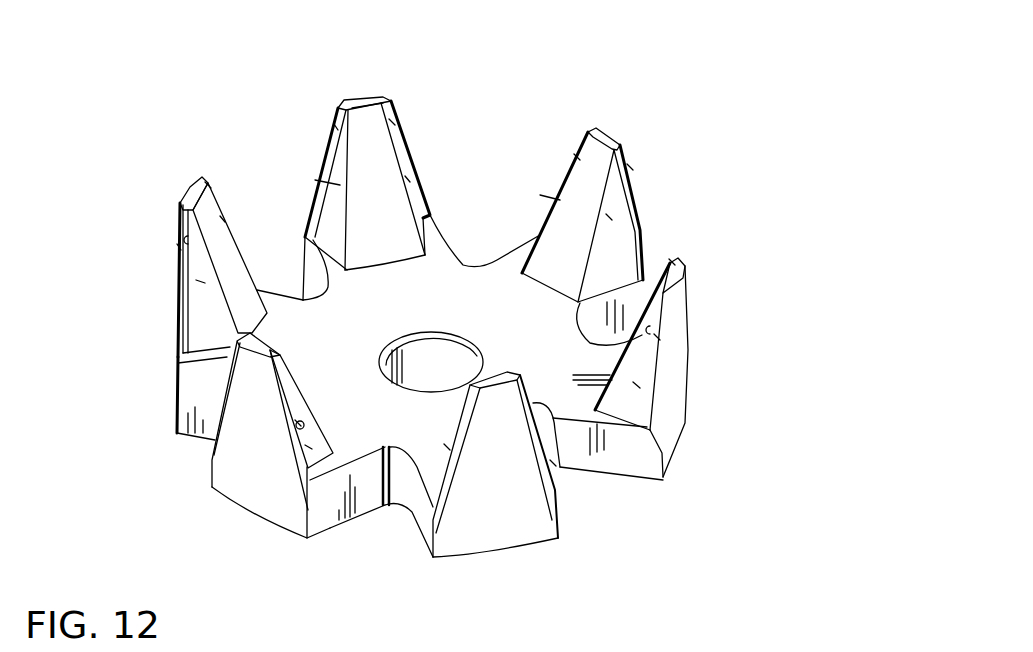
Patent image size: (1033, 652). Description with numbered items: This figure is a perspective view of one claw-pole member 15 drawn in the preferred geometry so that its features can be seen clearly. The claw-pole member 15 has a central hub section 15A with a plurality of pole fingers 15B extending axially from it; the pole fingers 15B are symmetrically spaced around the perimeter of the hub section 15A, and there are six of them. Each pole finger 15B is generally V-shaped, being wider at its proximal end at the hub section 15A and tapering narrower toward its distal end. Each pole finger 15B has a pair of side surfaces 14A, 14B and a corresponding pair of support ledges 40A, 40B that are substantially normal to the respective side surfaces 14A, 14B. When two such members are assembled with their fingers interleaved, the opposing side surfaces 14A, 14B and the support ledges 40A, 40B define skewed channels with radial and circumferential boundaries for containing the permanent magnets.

The claw-pole member 15 is at (648, 120).
The hub section 15A is at (470, 293).
The pole fingers 15B is at (365, 120).
The side surface 14A is at (338, 185).
The side surface 14B is at (407, 180).
The support ledge 40A is at (337, 127).
The support ledge 40B is at (392, 122).